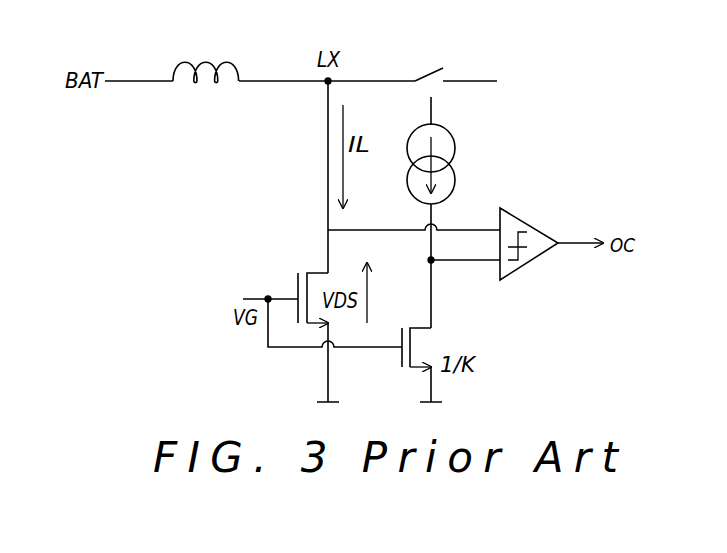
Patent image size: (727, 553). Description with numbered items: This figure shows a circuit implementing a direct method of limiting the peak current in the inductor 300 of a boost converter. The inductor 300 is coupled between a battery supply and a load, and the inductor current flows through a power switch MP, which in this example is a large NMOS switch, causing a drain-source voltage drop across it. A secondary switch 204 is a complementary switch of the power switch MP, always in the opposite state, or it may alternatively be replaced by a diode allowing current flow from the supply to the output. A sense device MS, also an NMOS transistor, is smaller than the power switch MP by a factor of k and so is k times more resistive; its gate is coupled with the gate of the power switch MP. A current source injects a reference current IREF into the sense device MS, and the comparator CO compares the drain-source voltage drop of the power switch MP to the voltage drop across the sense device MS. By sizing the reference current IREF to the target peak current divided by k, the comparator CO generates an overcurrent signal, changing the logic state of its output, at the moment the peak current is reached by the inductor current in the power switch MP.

The inductor 300 is at (203, 57).
The secondary switch 204 is at (423, 63).
The reference current IREF is at (450, 150).
The comparator CO is at (551, 237).
The power switch MP is at (309, 283).
The sense device MS is at (432, 342).